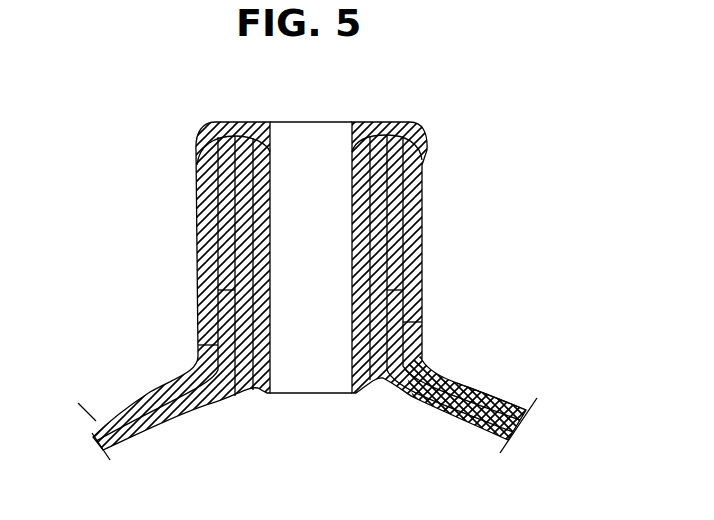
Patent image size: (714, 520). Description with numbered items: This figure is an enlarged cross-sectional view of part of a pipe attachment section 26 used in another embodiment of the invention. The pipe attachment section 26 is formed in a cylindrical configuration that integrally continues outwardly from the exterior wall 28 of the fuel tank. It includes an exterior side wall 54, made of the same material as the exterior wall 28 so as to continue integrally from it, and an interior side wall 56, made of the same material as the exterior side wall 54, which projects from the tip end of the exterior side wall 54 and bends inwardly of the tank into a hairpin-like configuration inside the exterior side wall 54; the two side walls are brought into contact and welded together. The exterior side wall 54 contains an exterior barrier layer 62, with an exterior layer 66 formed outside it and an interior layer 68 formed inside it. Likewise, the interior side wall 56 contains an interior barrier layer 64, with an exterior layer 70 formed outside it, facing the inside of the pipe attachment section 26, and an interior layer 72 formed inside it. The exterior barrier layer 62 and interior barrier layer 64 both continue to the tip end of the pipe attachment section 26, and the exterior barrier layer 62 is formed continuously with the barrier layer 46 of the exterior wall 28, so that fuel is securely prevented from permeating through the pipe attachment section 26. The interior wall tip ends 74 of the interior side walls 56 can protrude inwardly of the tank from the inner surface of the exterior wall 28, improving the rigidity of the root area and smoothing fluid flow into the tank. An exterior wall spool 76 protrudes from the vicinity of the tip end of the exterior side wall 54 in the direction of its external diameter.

The pipe attachment section 26 is at (198, 131).
The exterior wall 28 is at (450, 410).
The barrier layer 46 is at (497, 418).
The exterior side wall 54 is at (208, 186).
The interior side wall 56 is at (270, 229).
The exterior barrier layer 62 is at (360, 255).
The interior barrier layer 64 is at (350, 259).
The exterior layer 66 is at (353, 288).
The interior layer 68 is at (353, 320).
The exterior layer 70 is at (353, 287).
The interior layer 72 is at (350, 318).
The interior wall tip ends 74 is at (256, 393).
The exterior wall spool 76 is at (196, 157).